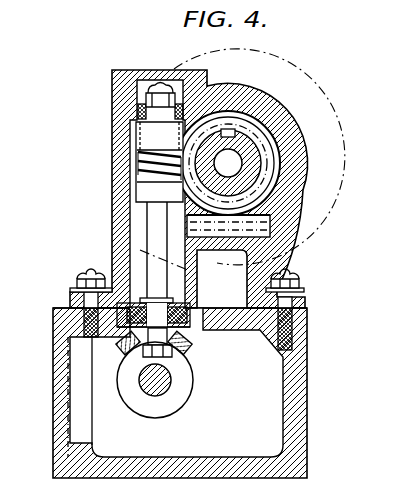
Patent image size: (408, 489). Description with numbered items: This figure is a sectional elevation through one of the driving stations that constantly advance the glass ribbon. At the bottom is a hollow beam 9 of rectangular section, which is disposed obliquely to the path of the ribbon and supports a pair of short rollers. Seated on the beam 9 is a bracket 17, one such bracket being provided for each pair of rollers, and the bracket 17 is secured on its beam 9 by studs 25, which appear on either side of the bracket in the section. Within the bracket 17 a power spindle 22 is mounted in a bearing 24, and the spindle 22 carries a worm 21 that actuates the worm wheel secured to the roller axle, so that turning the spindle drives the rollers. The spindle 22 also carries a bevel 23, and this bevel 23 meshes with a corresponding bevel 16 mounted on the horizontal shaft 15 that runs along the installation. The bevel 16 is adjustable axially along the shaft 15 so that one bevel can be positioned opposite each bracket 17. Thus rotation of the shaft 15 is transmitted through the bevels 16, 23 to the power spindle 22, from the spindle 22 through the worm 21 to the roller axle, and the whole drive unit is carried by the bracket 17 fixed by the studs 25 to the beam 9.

The hollow beam 9 is at (288, 341).
The shaft 15 is at (145, 392).
The bevel 16 is at (165, 393).
The bracket 17 is at (281, 112).
The worm 21 is at (135, 140).
The power spindle 22 is at (148, 226).
The bevel 23 is at (190, 349).
The bearing 24 is at (80, 312).
The stud 25 is at (80, 282).